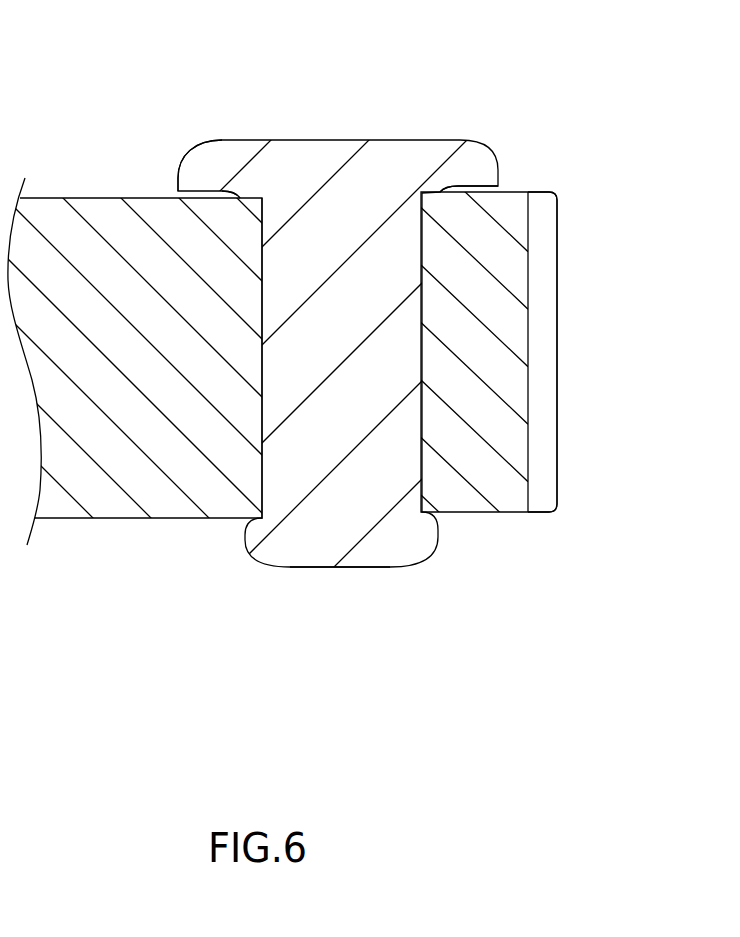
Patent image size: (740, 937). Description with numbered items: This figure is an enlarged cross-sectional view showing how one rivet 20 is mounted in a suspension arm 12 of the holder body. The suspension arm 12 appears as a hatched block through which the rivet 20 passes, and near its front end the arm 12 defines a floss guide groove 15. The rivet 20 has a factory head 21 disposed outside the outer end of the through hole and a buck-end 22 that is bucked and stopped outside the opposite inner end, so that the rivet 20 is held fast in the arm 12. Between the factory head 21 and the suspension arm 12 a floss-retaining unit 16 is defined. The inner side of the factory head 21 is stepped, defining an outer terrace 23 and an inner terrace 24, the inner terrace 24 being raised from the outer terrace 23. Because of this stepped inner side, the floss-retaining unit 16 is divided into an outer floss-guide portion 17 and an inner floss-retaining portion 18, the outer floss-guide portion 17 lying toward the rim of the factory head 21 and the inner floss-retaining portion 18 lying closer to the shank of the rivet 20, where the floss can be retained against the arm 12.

The suspension arm 12 is at (144, 487).
The floss guide groove 15 is at (545, 375).
The floss-retaining unit 16 is at (505, 188).
The outer floss-guide portion 17 is at (481, 187).
The inner floss-retaining portion 18 is at (434, 191).
The rivet 20 is at (343, 477).
The factory head 21 is at (333, 140).
The buck-end 22 is at (383, 567).
The outer terrace 23 is at (188, 178).
The inner terrace 24 is at (243, 192).